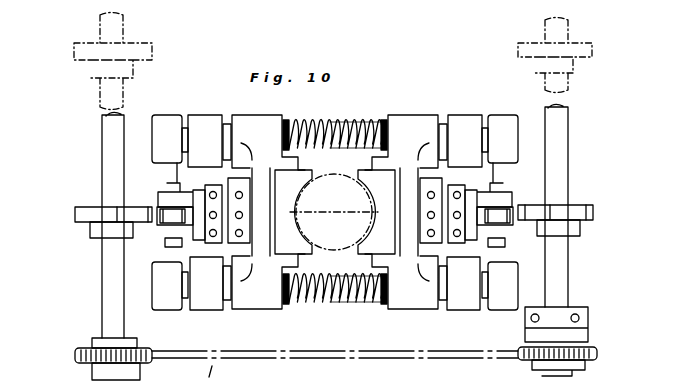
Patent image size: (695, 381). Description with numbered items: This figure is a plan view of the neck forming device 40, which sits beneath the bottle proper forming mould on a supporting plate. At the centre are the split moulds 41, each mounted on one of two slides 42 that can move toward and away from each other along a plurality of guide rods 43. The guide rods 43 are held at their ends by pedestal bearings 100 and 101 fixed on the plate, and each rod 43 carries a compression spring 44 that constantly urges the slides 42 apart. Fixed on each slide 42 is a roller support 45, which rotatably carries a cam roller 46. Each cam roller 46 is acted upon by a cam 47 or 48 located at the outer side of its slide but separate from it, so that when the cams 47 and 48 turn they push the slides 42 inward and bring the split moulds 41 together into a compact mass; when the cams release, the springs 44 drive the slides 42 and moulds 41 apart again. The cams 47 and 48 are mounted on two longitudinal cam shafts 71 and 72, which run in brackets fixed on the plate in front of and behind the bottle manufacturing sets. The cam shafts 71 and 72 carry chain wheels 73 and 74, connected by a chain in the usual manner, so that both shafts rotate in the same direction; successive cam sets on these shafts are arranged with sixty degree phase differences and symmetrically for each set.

The neck forming device 40 is at (335, 174).
The split moulds 41 is at (334, 212).
The slides 42 is at (255, 117).
The guide rods 43 is at (373, 123).
The compression spring 44 is at (312, 123).
The roller support 45 is at (167, 196).
The cam roller 46 is at (163, 217).
The cam 47 is at (580, 56).
The cam 48 is at (82, 58).
The cam shaft 71 is at (562, 160).
The cam shaft 72 is at (108, 160).
The chain wheel 73 is at (597, 348).
The chain wheel 74 is at (78, 352).
The pedestal bearing 100 is at (462, 120).
The pedestal bearing 101 is at (203, 118).